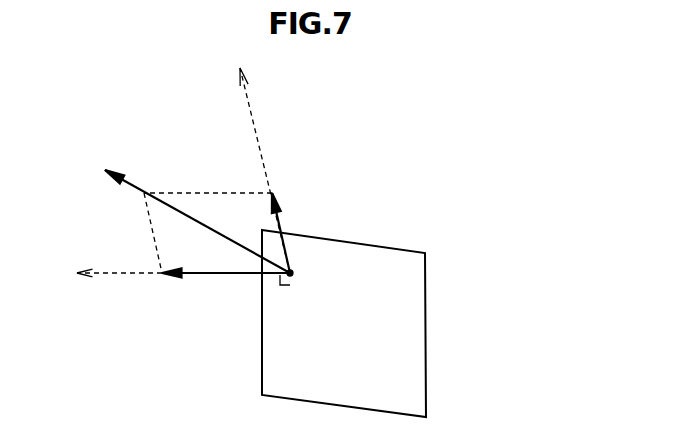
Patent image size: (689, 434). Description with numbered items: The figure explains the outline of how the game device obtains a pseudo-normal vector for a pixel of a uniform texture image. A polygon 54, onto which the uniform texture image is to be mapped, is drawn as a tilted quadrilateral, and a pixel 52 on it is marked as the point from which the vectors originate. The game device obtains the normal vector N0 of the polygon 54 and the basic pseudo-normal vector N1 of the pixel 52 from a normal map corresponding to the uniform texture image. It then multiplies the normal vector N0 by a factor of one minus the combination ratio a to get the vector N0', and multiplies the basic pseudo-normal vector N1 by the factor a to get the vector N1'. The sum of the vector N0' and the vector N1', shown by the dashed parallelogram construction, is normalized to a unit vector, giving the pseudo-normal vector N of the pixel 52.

The pixel 52 is at (290, 273).
The polygon 54 is at (427, 323).
The pseudo-normal vector N is at (184, 211).
The normal vector N0 is at (114, 291).
The basic pseudo-normal vector N1 is at (258, 157).
The vector N0' is at (223, 292).
The vector N1' is at (291, 224).